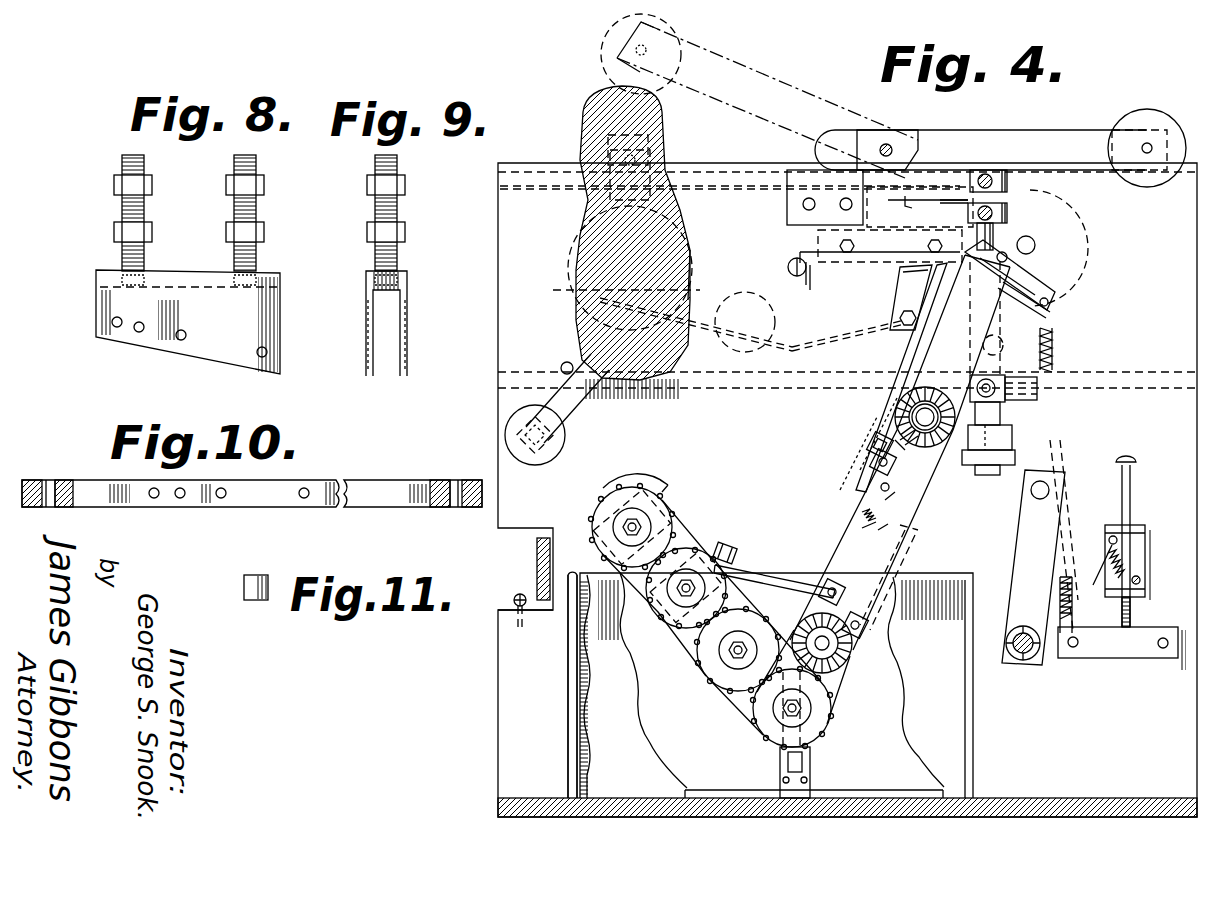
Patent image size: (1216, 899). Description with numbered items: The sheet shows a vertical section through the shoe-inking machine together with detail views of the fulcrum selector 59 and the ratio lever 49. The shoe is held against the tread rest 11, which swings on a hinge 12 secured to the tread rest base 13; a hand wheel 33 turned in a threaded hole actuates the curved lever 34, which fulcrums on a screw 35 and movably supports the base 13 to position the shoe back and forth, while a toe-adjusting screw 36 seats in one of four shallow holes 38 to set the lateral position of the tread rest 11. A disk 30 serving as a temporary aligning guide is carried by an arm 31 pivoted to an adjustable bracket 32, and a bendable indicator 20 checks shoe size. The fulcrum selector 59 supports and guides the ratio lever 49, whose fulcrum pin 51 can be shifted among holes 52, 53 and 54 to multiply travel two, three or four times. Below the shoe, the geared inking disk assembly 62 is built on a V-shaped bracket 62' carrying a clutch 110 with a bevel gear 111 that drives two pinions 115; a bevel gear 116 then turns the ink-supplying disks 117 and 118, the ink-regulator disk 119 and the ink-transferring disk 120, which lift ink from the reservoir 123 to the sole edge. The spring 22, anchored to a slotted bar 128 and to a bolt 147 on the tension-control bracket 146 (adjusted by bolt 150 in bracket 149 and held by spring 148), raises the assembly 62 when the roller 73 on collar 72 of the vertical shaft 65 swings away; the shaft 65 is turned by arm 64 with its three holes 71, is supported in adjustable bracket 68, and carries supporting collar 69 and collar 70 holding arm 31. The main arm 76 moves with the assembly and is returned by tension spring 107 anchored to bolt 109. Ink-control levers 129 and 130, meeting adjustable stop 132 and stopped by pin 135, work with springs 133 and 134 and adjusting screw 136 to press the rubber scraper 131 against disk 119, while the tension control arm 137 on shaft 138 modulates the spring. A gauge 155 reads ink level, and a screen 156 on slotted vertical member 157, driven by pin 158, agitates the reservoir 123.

In FIG. 4, the tread rest 11 is at (690, 292).
In FIG. 4, the hinge 12 is at (652, 152).
In FIG. 4, the tread rest base 13 is at (652, 140).
In FIG. 4, the indicator 20 is at (873, 262).
In FIG. 4, the spring 22 is at (1054, 332).
In FIG. 4, the disk 30 is at (603, 52).
In FIG. 4, the arm 31 is at (965, 130).
In FIG. 4, the bracket 32 is at (822, 132).
In FIG. 4, the hand wheel 33 is at (566, 440).
In FIG. 4, the curved lever 34 is at (575, 405).
In FIG. 4, the screw 35 is at (560, 366).
In FIG. 4, the toe-adjusting screw 36 is at (710, 314).
In FIG. 4, the shallow holes 38 is at (692, 268).
In FIG. 10, the ratio lever 49 is at (330, 480).
In FIG. 11, the ratio lever 49 is at (262, 576).
In FIG. 8, the fulcrum pin 51 is at (262, 358).
In FIG. 8, the hole 52 is at (182, 341).
In FIG. 8, the hole 53 is at (139, 333).
In FIG. 8, the hole 54 is at (114, 328).
In FIG. 8, the fulcrum selector 59 is at (166, 275).
In FIG. 9, the fulcrum selector 59 is at (372, 280).
In FIG. 4, the geared inking disk assembly 62 is at (750, 565).
In FIG. 4, the V-shaped bracket 62' is at (900, 452).
In FIG. 4, the arm 64 is at (968, 212).
In FIG. 4, the vertical shaft 65 is at (995, 238).
In FIG. 4, the adjustable bracket 68 is at (1053, 352).
In FIG. 4, the supporting collar 69 is at (1007, 258).
In FIG. 4, the collar 70 is at (990, 172).
In FIG. 4, the holes 71 is at (905, 204).
In FIG. 4, the collar 72 is at (975, 378).
In FIG. 4, the roller 73 is at (1025, 400).
In FIG. 4, the main arm 76 is at (536, 562).
In FIG. 4, the tension spring 107 is at (497, 611).
In FIG. 4, the bolt 109 is at (518, 594).
In FIG. 4, the clutch 110 is at (895, 440).
In FIG. 4, the bevel gear 111 is at (895, 416).
In FIG. 4, the pinions 115 is at (870, 447).
In FIG. 4, the bevel gear 116 is at (852, 660).
In FIG. 4, the ink-supplying disk 117 is at (755, 712).
In FIG. 4, the ink-supplying disk 118 is at (724, 682).
In FIG. 4, the ink-regulator disk 119 is at (678, 624).
In FIG. 4, the ink-transferring disk 120 is at (592, 520).
In FIG. 4, the ink reservoir 123 is at (632, 752).
In FIG. 4, the slotted bar 128 is at (1058, 300).
In FIG. 4, the ink-control lever 129 is at (907, 347).
In FIG. 4, the ink-control lever 130 is at (778, 585).
In FIG. 4, the rubber scraper 131 is at (732, 542).
In FIG. 4, the adjustable stop 132 is at (895, 300).
In FIG. 4, the tension spring 133 is at (860, 515).
In FIG. 4, the tension spring 134 is at (884, 498).
In FIG. 4, the pin 135 is at (880, 486).
In FIG. 4, the adjusting screw 136 is at (860, 530).
In FIG. 4, the tension control arm 137 is at (1026, 506).
In FIG. 4, the shaft 138 is at (1018, 661).
In FIG. 4, the tension-control bracket 146 is at (1142, 658).
In FIG. 4, the bolt 147 is at (1070, 660).
In FIG. 4, the spring 148 is at (1108, 545).
In FIG. 4, the bracket 149 is at (1140, 540).
In FIG. 4, the bolt 150 is at (1132, 612).
In FIG. 4, the gauge 155 is at (566, 714).
In FIG. 4, the screen 156 is at (715, 790).
In FIG. 4, the vertical member 157 is at (812, 772).
In FIG. 4, the pin 158 is at (818, 715).